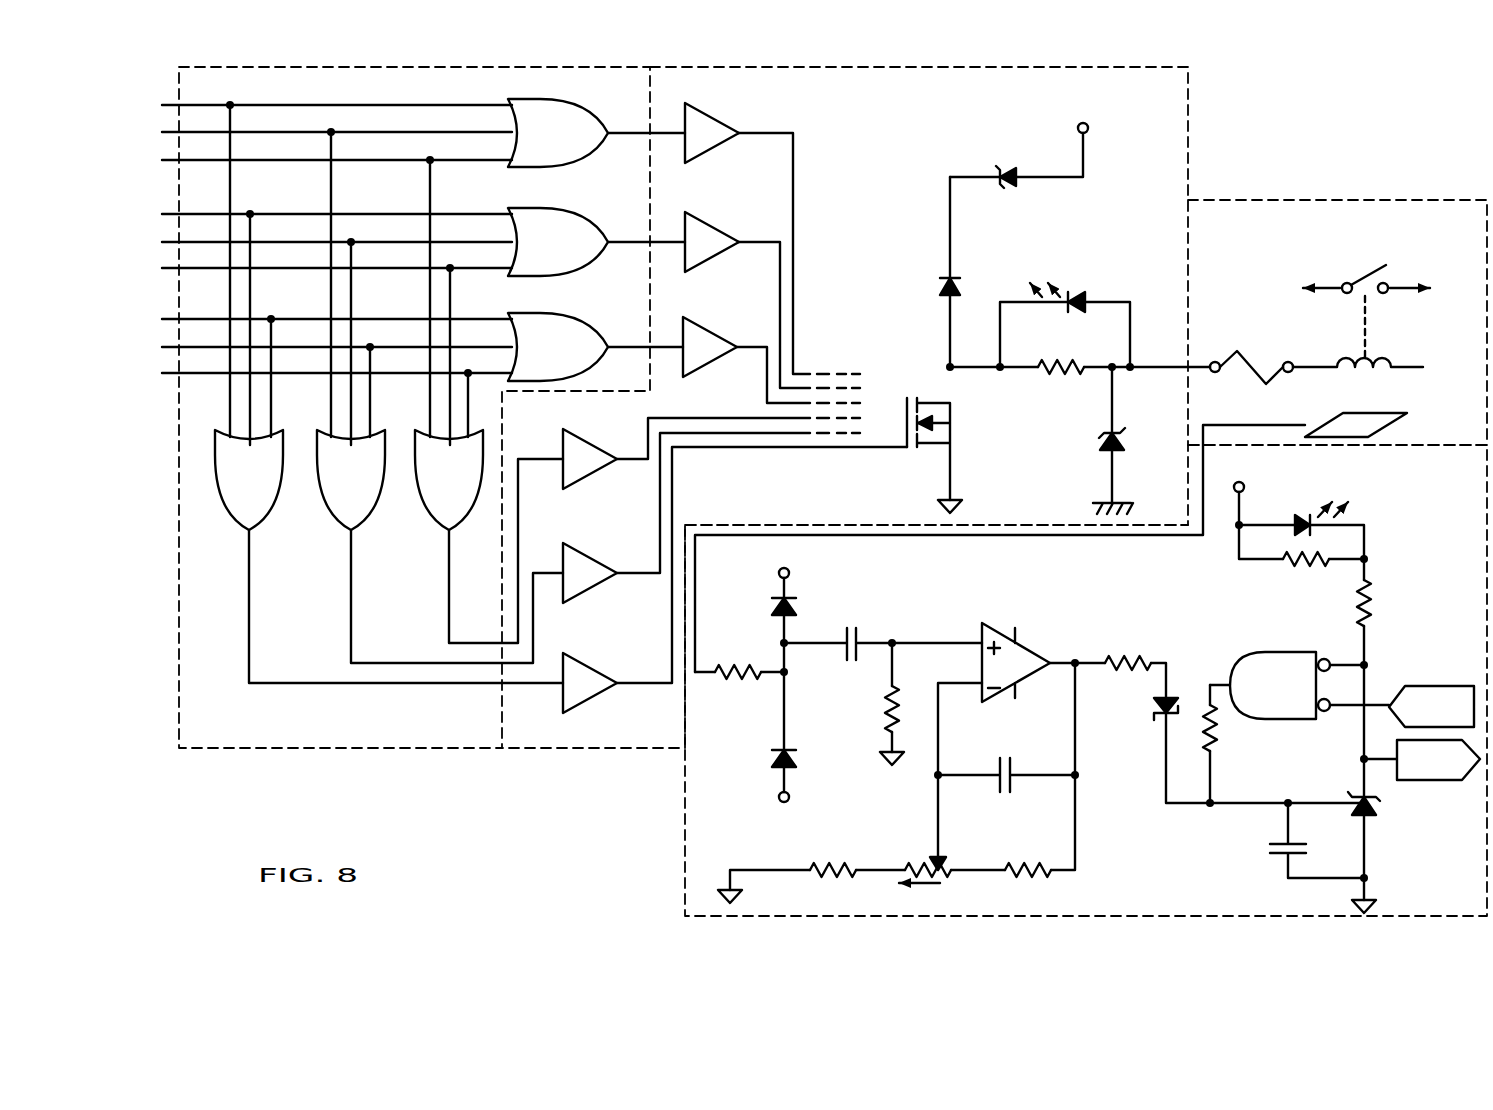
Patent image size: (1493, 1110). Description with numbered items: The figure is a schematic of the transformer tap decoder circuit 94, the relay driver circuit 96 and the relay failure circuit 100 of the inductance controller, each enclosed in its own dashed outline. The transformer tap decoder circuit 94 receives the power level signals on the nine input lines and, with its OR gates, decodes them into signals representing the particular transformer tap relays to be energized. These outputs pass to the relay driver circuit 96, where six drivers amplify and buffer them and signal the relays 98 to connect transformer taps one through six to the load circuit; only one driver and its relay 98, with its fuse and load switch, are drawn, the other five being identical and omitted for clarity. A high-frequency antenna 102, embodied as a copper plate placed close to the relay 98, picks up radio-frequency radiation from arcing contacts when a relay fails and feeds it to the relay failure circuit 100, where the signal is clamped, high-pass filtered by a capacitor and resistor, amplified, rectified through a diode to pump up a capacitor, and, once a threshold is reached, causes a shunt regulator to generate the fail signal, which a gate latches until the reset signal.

The transformer tap decoder circuit 94 is at (330, 758).
The relay driver circuit 96 is at (1202, 105).
The relay 98 is at (1407, 193).
The relay failure circuit 100 is at (677, 857).
The high-frequency antenna 102 is at (1410, 425).